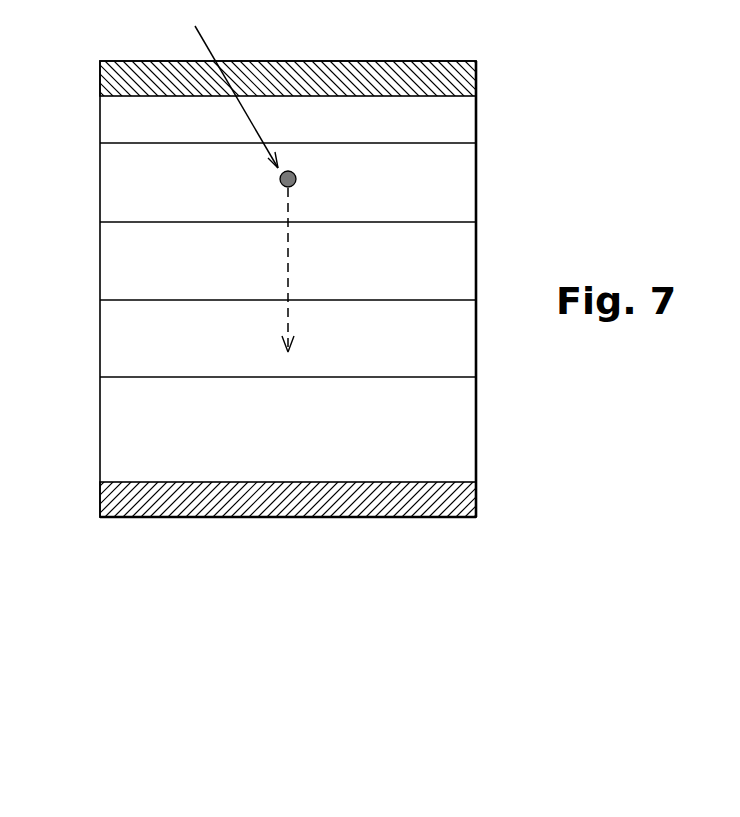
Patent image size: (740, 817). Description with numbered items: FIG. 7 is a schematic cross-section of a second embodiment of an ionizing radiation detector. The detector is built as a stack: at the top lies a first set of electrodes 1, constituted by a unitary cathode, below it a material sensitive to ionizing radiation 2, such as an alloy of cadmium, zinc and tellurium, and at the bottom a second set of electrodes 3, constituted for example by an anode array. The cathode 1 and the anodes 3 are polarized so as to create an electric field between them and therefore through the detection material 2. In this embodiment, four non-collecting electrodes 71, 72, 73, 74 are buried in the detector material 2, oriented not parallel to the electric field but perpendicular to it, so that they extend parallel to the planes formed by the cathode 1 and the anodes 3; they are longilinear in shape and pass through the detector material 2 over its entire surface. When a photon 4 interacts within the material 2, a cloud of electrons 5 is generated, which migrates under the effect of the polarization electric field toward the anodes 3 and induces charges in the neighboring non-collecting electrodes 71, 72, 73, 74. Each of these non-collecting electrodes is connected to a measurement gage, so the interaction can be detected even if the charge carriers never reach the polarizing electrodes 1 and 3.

The first set of electrodes 1 is at (405, 62).
The material sensitive to ionizing radiation 2 is at (433, 263).
The second set of electrodes 3 is at (417, 498).
The photon 4 is at (200, 37).
The cloud of electrons 5 is at (296, 175).
The non-collecting electrode 71 is at (128, 143).
The non-collecting electrode 72 is at (131, 222).
The non-collecting electrode 73 is at (137, 300).
The non-collecting electrode 74 is at (137, 377).